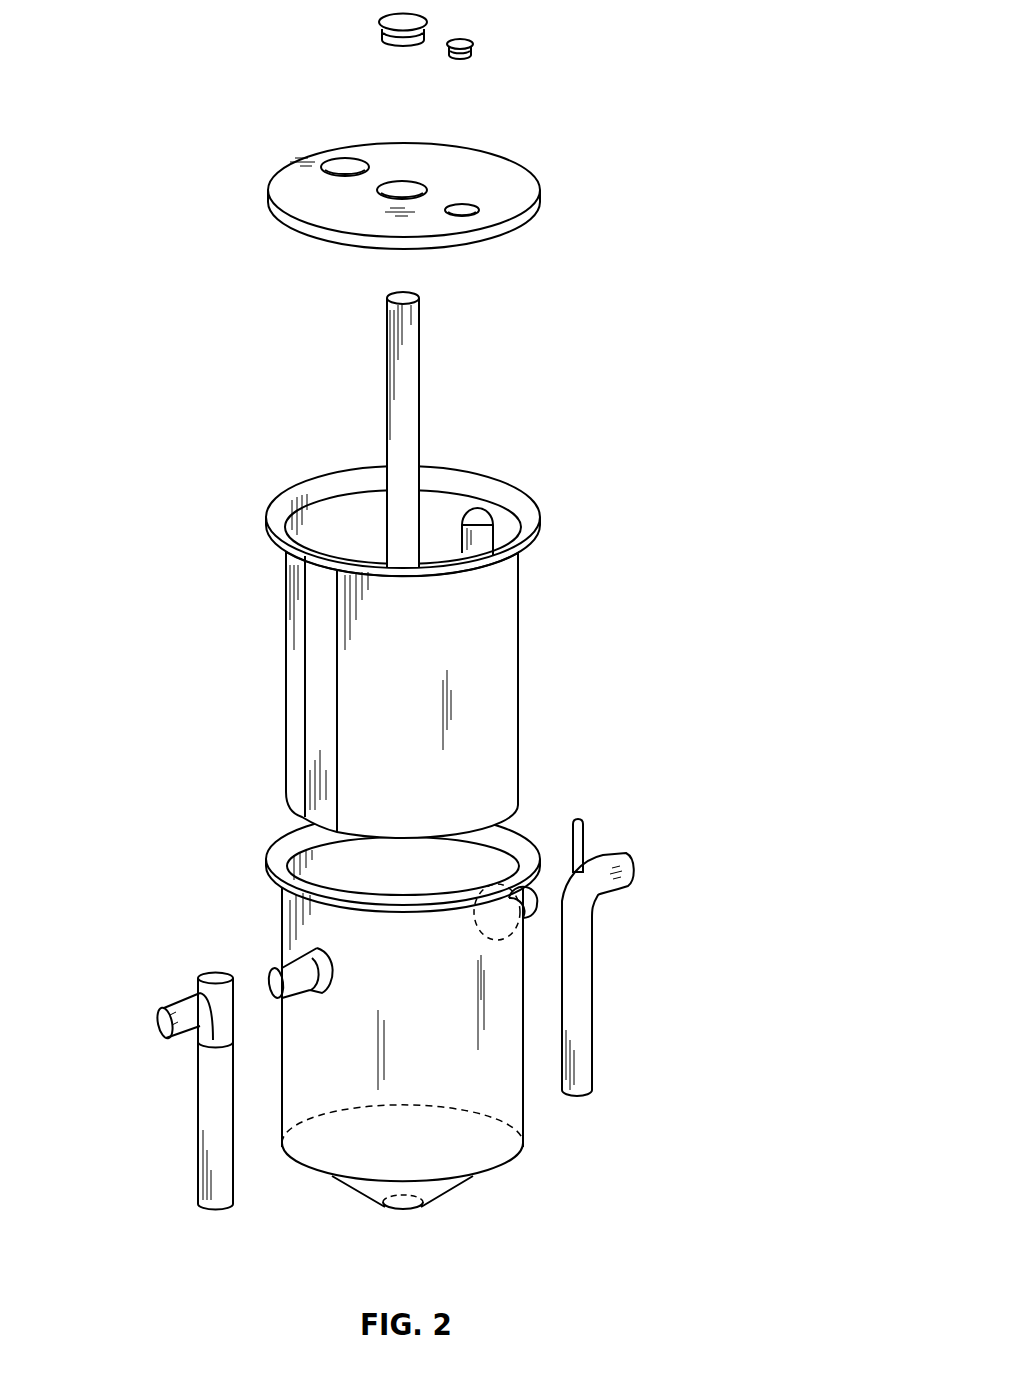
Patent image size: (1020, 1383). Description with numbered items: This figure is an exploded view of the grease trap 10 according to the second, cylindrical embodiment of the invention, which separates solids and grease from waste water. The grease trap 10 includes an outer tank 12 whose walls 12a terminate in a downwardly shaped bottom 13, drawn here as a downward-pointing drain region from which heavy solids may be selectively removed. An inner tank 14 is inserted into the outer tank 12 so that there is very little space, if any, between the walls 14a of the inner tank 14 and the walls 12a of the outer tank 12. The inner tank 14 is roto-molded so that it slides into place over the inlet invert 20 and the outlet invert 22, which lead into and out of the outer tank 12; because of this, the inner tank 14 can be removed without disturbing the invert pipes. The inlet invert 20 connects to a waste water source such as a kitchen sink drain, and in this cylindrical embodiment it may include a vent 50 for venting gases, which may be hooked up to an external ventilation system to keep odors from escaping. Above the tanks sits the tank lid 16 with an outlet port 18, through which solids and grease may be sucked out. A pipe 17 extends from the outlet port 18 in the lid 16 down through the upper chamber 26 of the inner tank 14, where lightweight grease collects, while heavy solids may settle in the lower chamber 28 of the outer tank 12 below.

The grease trap 10 is at (697, 498).
The outer tank 12 is at (525, 1122).
The walls of the outer tank 12a is at (502, 1040).
The downwardly shaped bottom 13 is at (437, 1192).
The inner tank 14 is at (498, 704).
The walls of the inner tank 14a is at (493, 652).
The tank lid 16 is at (523, 195).
The pipe 17 is at (418, 431).
The outlet port 18 is at (368, 165).
The inlet invert 20 is at (633, 870).
The outlet invert 22 is at (203, 998).
The upper chamber 26 is at (445, 510).
The lower chamber 28 is at (480, 873).
The vent 50 is at (583, 827).